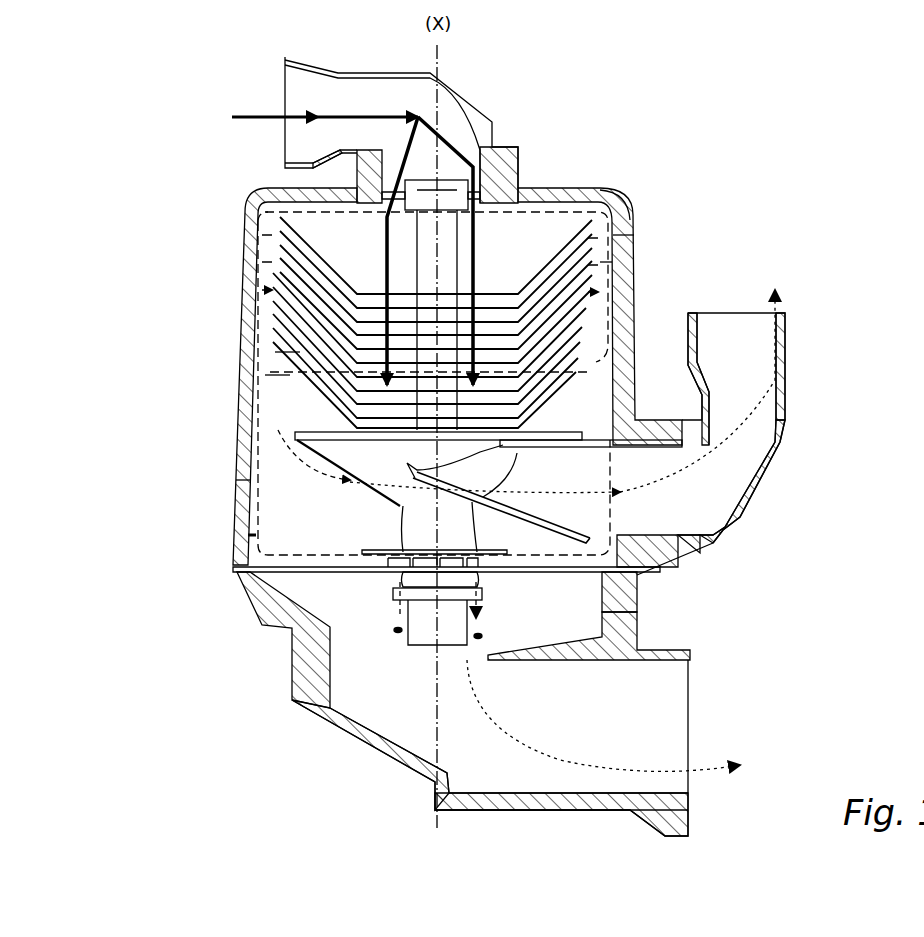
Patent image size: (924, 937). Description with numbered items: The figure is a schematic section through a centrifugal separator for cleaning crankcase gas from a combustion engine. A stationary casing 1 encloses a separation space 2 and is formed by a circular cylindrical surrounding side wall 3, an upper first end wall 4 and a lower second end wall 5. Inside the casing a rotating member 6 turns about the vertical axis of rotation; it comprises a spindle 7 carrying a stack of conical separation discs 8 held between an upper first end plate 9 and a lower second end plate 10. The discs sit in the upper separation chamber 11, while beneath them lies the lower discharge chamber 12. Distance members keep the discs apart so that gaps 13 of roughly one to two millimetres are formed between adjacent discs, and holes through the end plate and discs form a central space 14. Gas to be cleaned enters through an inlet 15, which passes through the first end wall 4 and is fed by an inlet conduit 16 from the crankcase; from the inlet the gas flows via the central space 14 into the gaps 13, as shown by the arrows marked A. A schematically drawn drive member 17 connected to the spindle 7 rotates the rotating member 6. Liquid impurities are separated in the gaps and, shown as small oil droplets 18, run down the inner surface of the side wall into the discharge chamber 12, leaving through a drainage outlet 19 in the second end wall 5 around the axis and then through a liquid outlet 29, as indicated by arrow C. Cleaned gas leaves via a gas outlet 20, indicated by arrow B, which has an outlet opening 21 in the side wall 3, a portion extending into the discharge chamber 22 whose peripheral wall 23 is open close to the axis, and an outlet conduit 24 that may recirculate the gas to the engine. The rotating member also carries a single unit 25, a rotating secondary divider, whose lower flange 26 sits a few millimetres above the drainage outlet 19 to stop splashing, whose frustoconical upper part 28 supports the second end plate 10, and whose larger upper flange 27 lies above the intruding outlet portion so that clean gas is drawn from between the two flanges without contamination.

The stationary casing 1 is at (255, 190).
The separation space 2 is at (350, 232).
The surrounding side wall 3 is at (245, 342).
The first end wall 4 is at (608, 195).
The second end wall 5 is at (320, 590).
The rotating member 6 is at (268, 292).
The spindle 7 is at (450, 193).
The separation discs 8 is at (606, 270).
The first end plate 9 is at (618, 212).
The second end plate 10 is at (280, 355).
The separation chamber 11 is at (275, 378).
The discharge chamber 12 is at (242, 493).
The gaps 13 is at (625, 240).
The central space 14 is at (480, 242).
The inlet 15 is at (395, 225).
The inlet conduit 16 is at (312, 82).
The drive member 17 is at (605, 625).
The oil droplets 18 is at (248, 535).
The drainage outlet 19 is at (403, 540).
The gas outlet 20 is at (735, 490).
The outlet opening 21 is at (490, 470).
The portion extending into the discharge chamber 22 is at (640, 593).
The peripheral wall 23 is at (640, 552).
The outlet conduit 24 is at (770, 360).
The single unit 25 is at (322, 572).
The lower flange 26 is at (275, 572).
The upper flange 27 is at (290, 434).
The frustoconical upper part 28 is at (380, 445).
The liquid outlet 29 is at (650, 715).